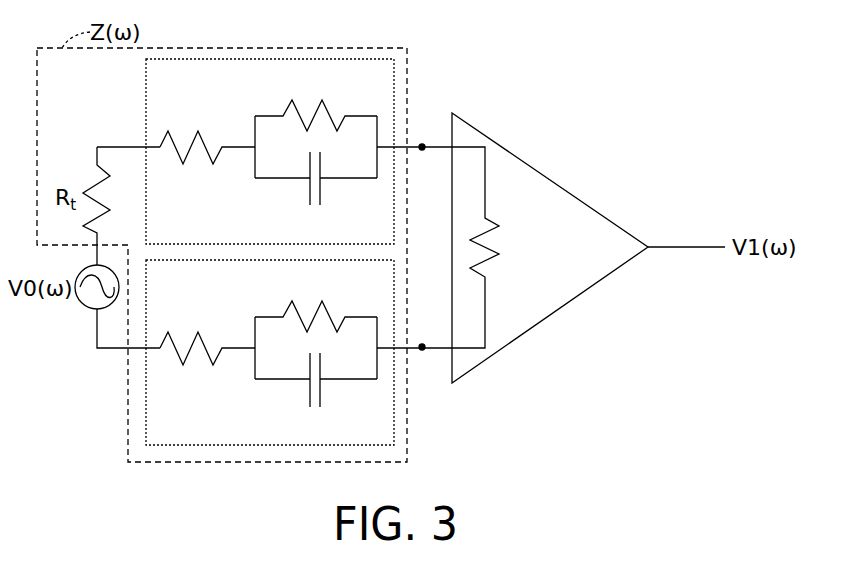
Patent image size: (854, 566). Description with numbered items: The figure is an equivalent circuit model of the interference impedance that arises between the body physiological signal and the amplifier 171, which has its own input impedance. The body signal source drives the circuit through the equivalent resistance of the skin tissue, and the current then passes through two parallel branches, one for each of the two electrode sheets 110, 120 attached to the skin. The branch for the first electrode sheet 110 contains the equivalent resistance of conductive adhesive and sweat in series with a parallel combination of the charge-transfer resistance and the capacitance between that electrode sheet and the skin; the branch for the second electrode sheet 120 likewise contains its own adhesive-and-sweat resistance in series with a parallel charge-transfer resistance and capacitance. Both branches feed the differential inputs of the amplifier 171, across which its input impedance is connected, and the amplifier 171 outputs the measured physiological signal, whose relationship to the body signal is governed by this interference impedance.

The electrode sheet 110 is at (272, 59).
The electrode sheet 120 is at (270, 445).
The amplifier 171 is at (550, 178).